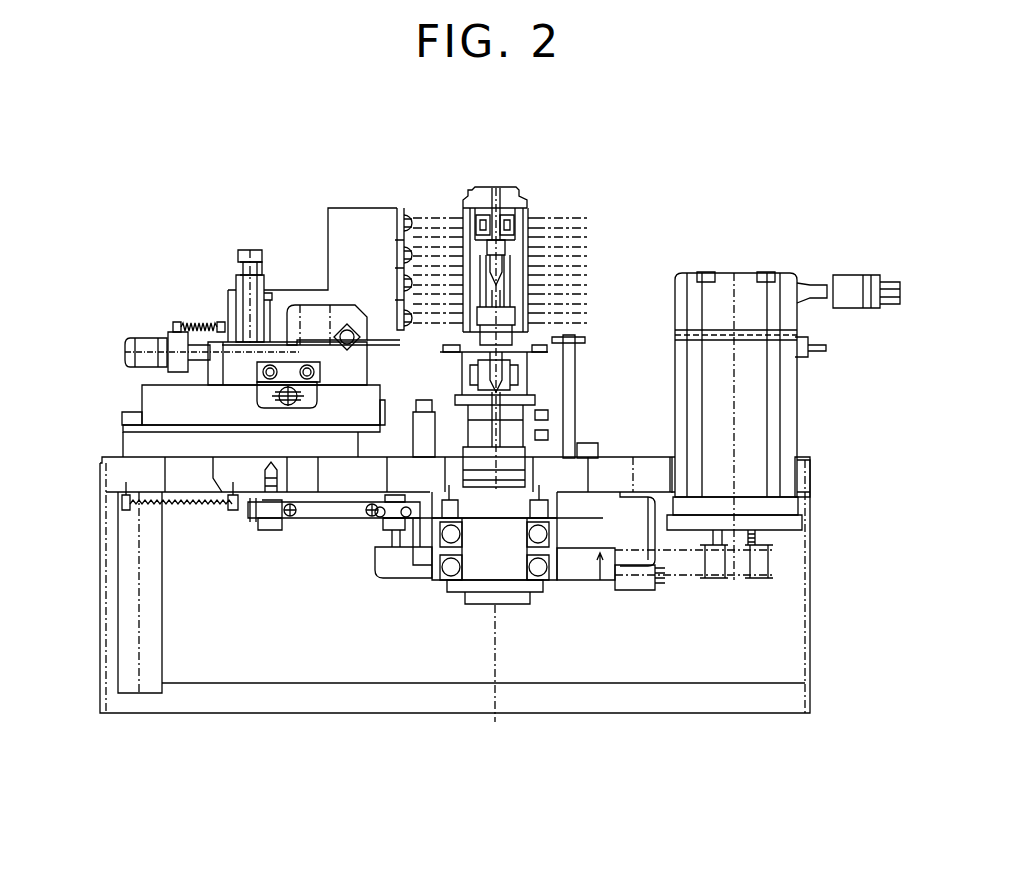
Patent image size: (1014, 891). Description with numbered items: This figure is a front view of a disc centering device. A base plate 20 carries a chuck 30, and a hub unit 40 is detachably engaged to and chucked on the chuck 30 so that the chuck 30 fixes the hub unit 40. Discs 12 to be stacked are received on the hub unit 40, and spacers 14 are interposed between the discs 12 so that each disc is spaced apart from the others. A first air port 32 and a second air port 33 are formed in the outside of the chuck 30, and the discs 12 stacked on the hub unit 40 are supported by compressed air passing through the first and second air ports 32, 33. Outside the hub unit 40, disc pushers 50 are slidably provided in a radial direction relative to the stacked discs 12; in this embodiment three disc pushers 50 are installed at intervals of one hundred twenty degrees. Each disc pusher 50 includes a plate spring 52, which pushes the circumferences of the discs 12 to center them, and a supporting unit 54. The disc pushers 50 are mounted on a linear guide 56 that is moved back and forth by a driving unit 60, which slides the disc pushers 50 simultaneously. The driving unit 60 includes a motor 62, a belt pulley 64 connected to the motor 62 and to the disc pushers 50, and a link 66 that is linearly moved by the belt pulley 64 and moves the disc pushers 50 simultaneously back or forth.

The discs 12 is at (573, 218).
The spacers 14 is at (527, 215).
The base plate 20 is at (99, 473).
The chuck 30 is at (576, 382).
The first air port 32 is at (548, 415).
The second air port 33 is at (523, 455).
The hub unit 40 is at (466, 193).
The disc pushers 50 is at (236, 280).
The plate springs 52 is at (395, 220).
The supporting unit 54 is at (404, 213).
The linear guide 56 is at (142, 386).
The driving unit 60 is at (806, 278).
The motor 62 is at (787, 390).
The belt pulley 64 is at (390, 570).
The link 66 is at (318, 518).